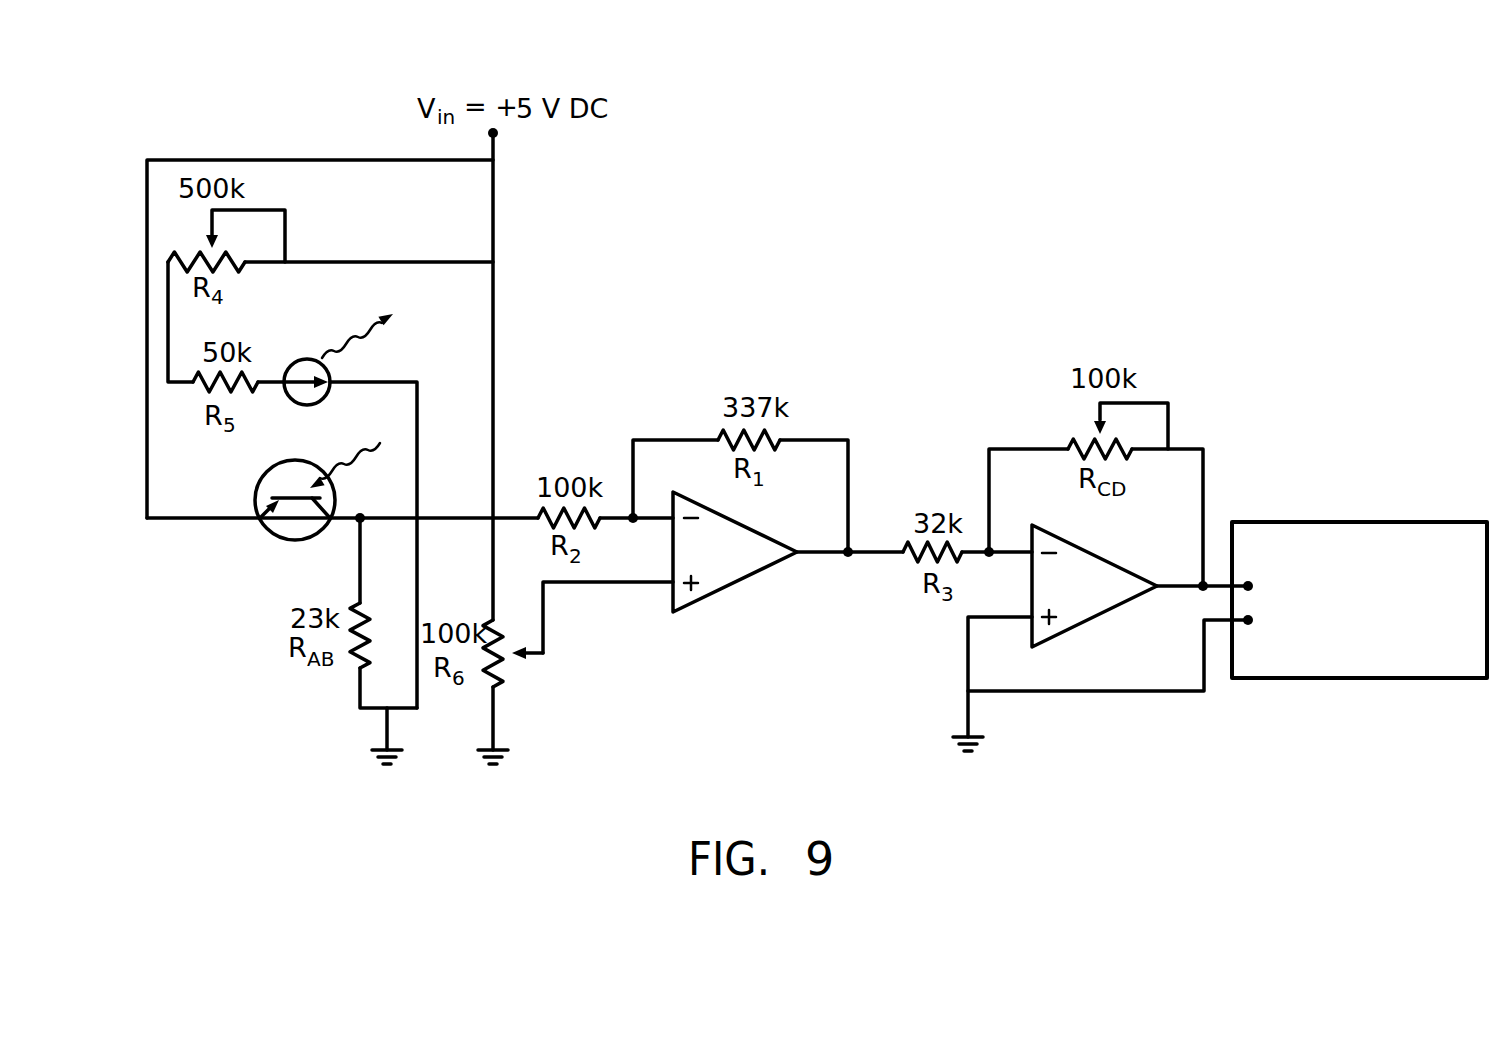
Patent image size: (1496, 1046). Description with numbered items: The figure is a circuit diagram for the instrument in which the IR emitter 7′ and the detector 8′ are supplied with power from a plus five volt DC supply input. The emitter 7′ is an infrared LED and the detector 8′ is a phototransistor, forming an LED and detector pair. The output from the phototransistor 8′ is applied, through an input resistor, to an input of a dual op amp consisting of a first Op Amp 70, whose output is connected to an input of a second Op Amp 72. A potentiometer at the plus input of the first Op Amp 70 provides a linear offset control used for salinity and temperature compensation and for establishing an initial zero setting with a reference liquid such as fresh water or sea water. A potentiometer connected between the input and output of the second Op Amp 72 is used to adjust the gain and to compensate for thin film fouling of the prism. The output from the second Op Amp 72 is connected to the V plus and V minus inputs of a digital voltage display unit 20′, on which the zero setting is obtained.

The IR emitter 7′ is at (320, 405).
The detector 8′ is at (288, 542).
The first Op Amp 70 is at (712, 593).
The second Op Amp 72 is at (1082, 627).
The digital voltage display unit 20′ is at (1362, 520).